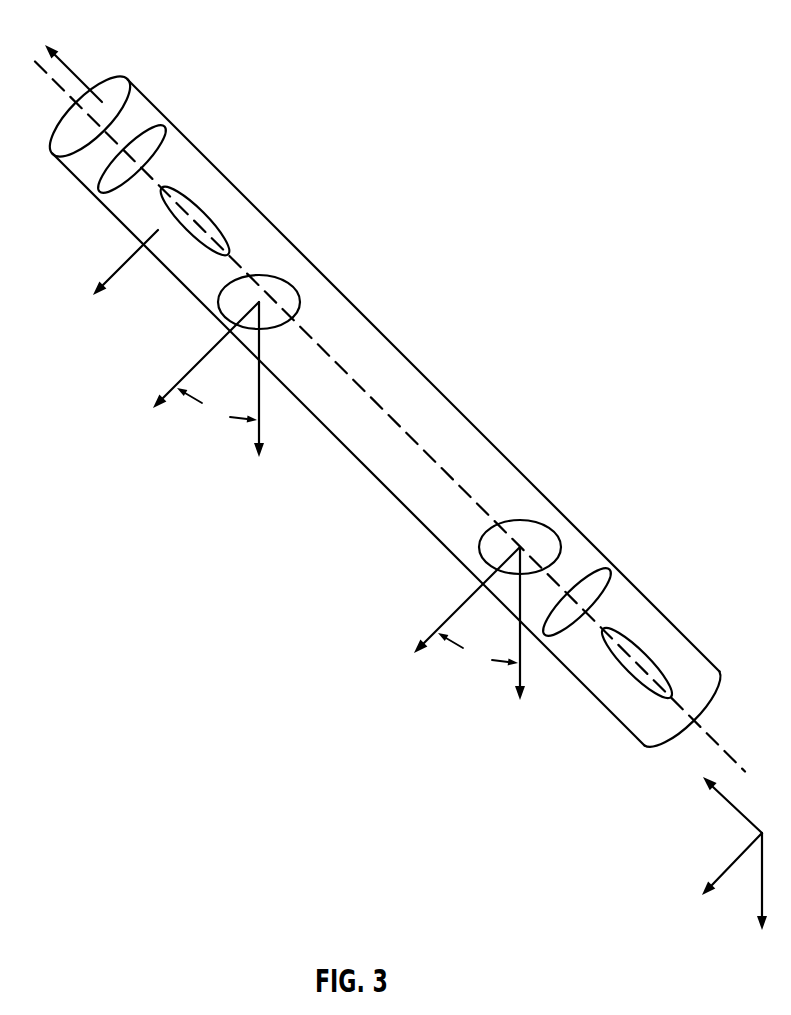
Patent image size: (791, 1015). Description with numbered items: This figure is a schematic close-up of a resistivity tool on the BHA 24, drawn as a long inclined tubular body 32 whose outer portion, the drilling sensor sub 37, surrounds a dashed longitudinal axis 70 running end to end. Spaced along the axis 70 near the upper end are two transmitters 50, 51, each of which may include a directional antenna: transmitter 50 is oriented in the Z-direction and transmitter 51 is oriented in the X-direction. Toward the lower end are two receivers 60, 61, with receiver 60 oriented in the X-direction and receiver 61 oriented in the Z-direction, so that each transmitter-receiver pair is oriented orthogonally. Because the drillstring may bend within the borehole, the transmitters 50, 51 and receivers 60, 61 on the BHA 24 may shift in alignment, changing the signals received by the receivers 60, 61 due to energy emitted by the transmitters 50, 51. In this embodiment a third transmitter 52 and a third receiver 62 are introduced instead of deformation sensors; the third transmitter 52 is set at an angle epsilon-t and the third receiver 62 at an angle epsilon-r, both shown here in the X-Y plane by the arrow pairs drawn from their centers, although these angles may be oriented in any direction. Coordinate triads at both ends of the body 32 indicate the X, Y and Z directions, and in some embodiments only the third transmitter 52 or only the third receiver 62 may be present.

The BHA 24 is at (501, 77).
The tubular body 32 is at (322, 236).
The drilling sensor sub 37 is at (413, 362).
The transmitter 50 is at (165, 127).
The transmitter 51 is at (160, 197).
The third transmitter 52 is at (252, 277).
The receiver 60 is at (608, 567).
The receiver 61 is at (648, 648).
The third receiver 62 is at (552, 528).
The longitudinal axis 70 is at (393, 413).